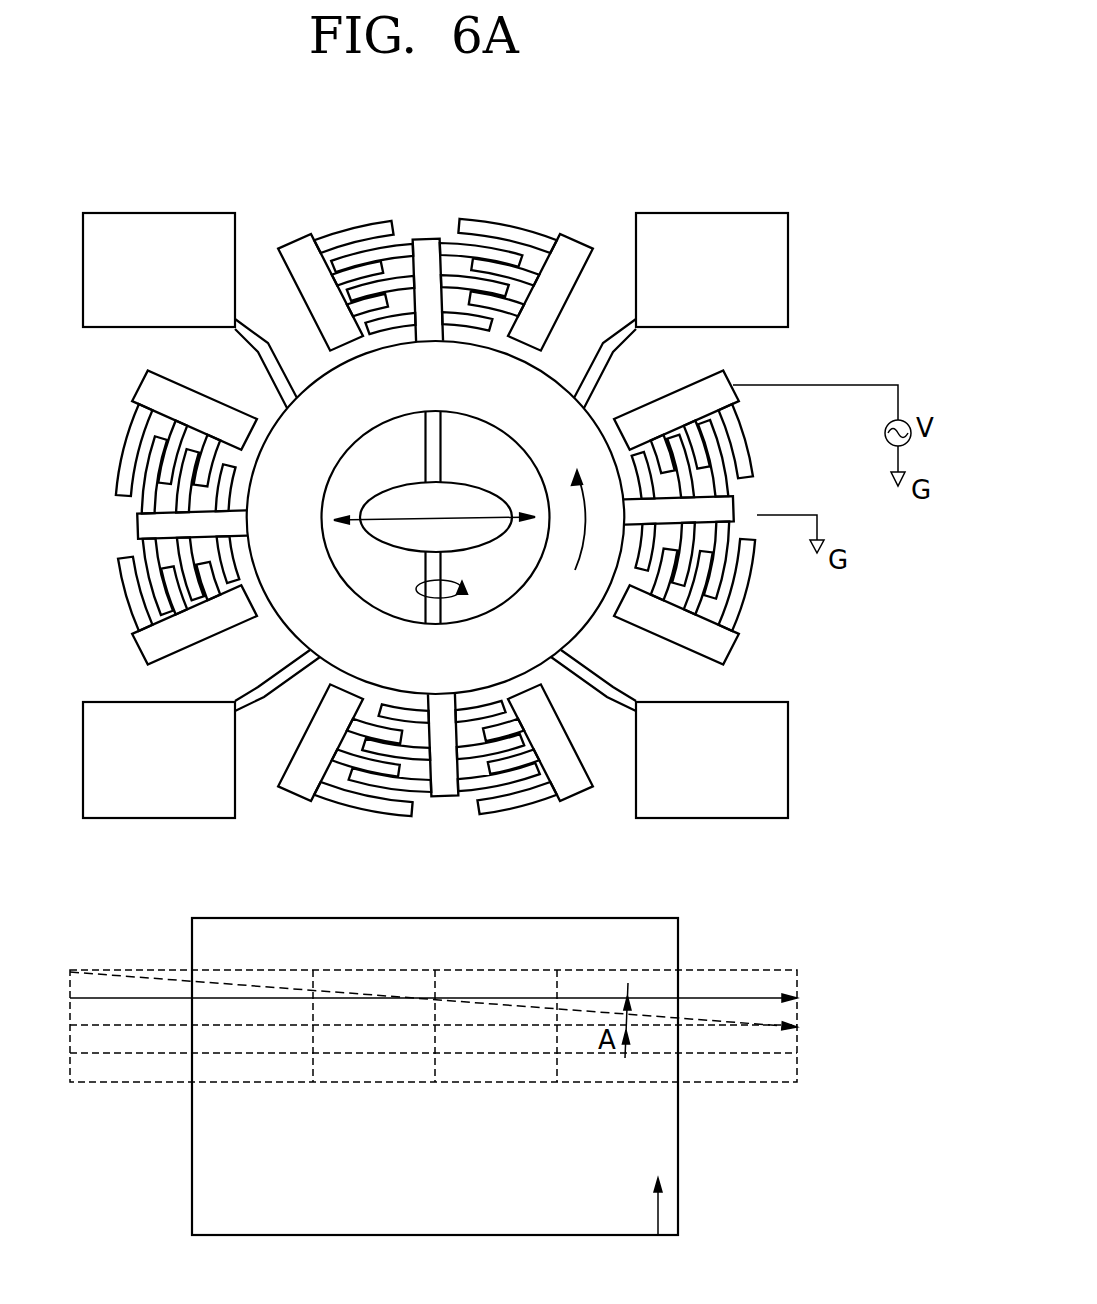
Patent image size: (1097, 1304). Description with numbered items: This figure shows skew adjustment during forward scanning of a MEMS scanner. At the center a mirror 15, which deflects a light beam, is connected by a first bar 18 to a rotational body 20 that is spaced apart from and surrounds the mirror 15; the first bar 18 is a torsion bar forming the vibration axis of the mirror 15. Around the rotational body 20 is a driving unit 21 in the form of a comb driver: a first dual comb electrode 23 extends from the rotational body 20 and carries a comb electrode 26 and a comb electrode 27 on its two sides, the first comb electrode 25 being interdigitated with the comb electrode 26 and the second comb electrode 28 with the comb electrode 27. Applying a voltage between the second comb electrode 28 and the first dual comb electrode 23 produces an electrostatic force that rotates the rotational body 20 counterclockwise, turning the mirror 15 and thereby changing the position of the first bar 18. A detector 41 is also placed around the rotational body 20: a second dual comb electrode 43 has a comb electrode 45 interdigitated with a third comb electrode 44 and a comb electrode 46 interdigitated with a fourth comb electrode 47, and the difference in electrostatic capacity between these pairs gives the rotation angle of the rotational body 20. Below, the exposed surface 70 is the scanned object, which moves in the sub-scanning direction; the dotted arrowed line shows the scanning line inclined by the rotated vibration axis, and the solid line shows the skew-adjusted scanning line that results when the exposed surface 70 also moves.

The mirror 15 is at (472, 490).
The first bar 18 is at (424, 452).
The rotational body 20 is at (363, 606).
The driving unit 21 is at (742, 517).
The first dual comb electrode 23 is at (732, 507).
The first comb electrode 25 is at (747, 607).
The comb electrode 26 is at (745, 558).
The comb electrode 27 is at (725, 455).
The second comb electrode 28 is at (747, 423).
The detector 41 is at (435, 239).
The second dual comb electrode 43 is at (426, 245).
The third comb electrode 44 is at (545, 230).
The comb electrode 45 is at (488, 245).
The comb electrode 46 is at (380, 243).
The fourth comb electrode 47 is at (340, 230).
The exposed surface 70 is at (440, 1237).